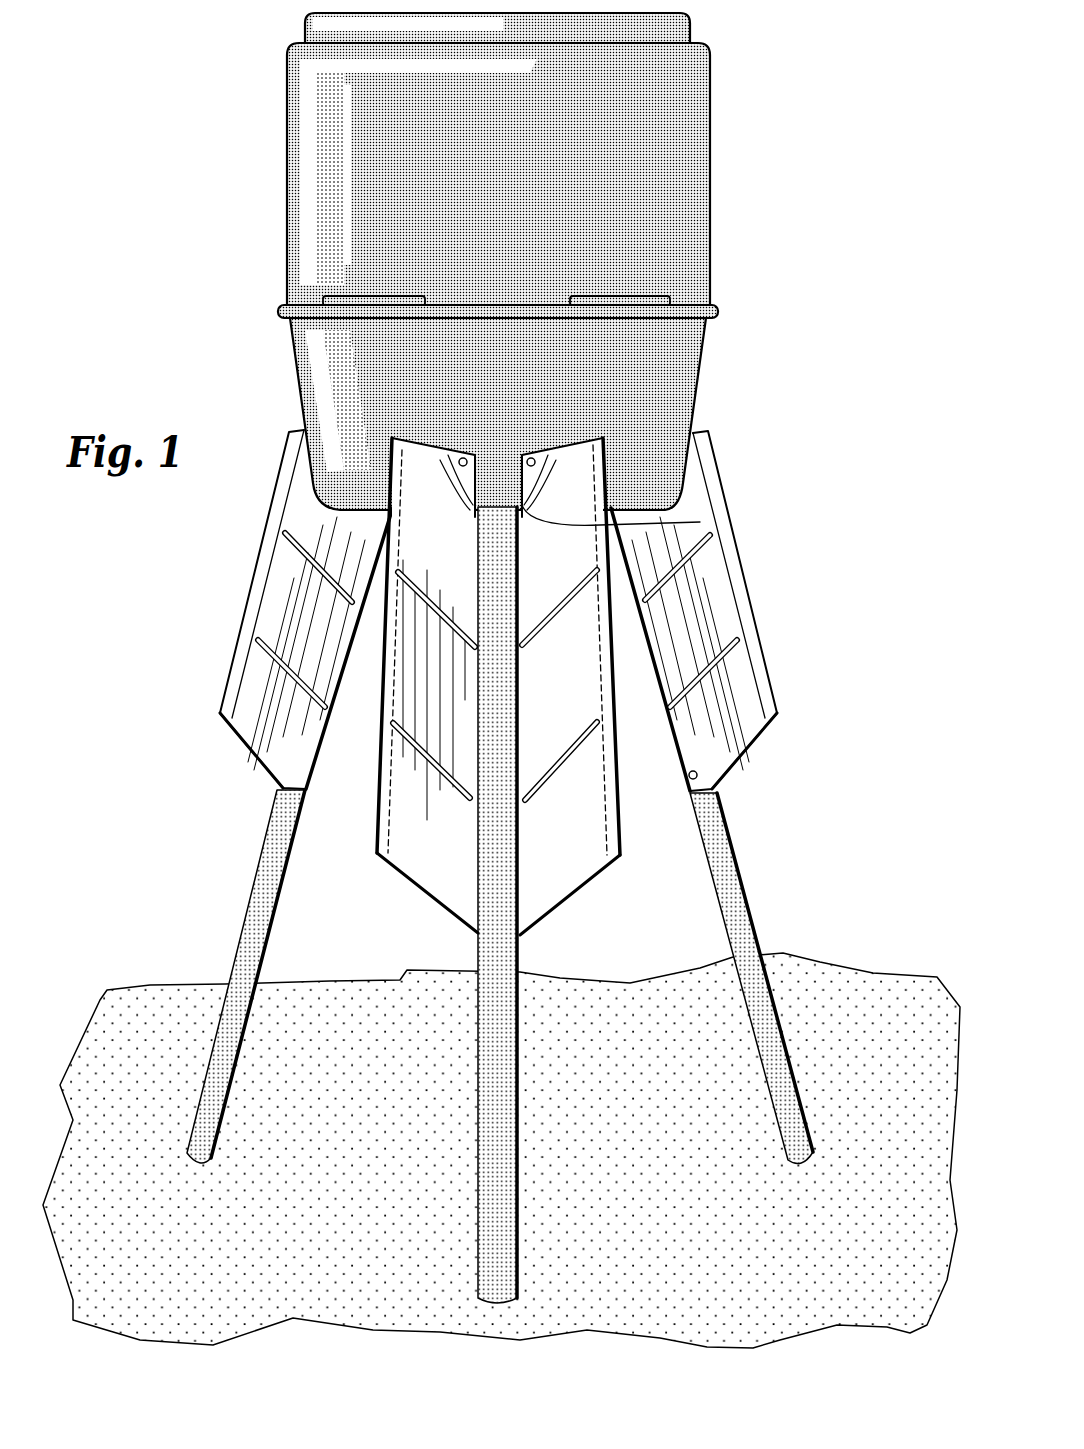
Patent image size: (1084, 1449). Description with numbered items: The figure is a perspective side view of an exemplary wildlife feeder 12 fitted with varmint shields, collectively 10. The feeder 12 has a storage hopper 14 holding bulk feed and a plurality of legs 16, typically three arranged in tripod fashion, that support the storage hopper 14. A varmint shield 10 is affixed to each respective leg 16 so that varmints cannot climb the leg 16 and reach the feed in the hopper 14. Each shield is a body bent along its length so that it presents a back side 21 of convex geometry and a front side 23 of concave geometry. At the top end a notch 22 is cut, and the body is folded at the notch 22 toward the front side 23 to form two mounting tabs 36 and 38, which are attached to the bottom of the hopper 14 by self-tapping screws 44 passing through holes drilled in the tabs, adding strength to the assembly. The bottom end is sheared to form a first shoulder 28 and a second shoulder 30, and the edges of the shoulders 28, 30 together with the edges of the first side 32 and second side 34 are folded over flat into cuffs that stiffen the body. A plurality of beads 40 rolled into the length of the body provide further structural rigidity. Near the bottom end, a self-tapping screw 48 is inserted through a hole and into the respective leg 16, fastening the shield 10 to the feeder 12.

The varmint shield 10 is at (507, 676).
The wildlife feeder 12 is at (247, 252).
The storage hopper 14 is at (716, 322).
The legs 16 is at (245, 902).
The back side 21 is at (255, 693).
The notch 22 is at (700, 522).
The front side 23 is at (408, 817).
The first shoulder 28 is at (447, 907).
The second shoulder 30 is at (548, 912).
The first side 32 is at (383, 687).
The second side 34 is at (623, 690).
The mounting tab 36 is at (462, 487).
The mounting tab 38 is at (550, 477).
The beads 40 is at (302, 558).
The self-tapping screws 44 is at (459, 462).
The self-tapping screw 48 is at (744, 794).